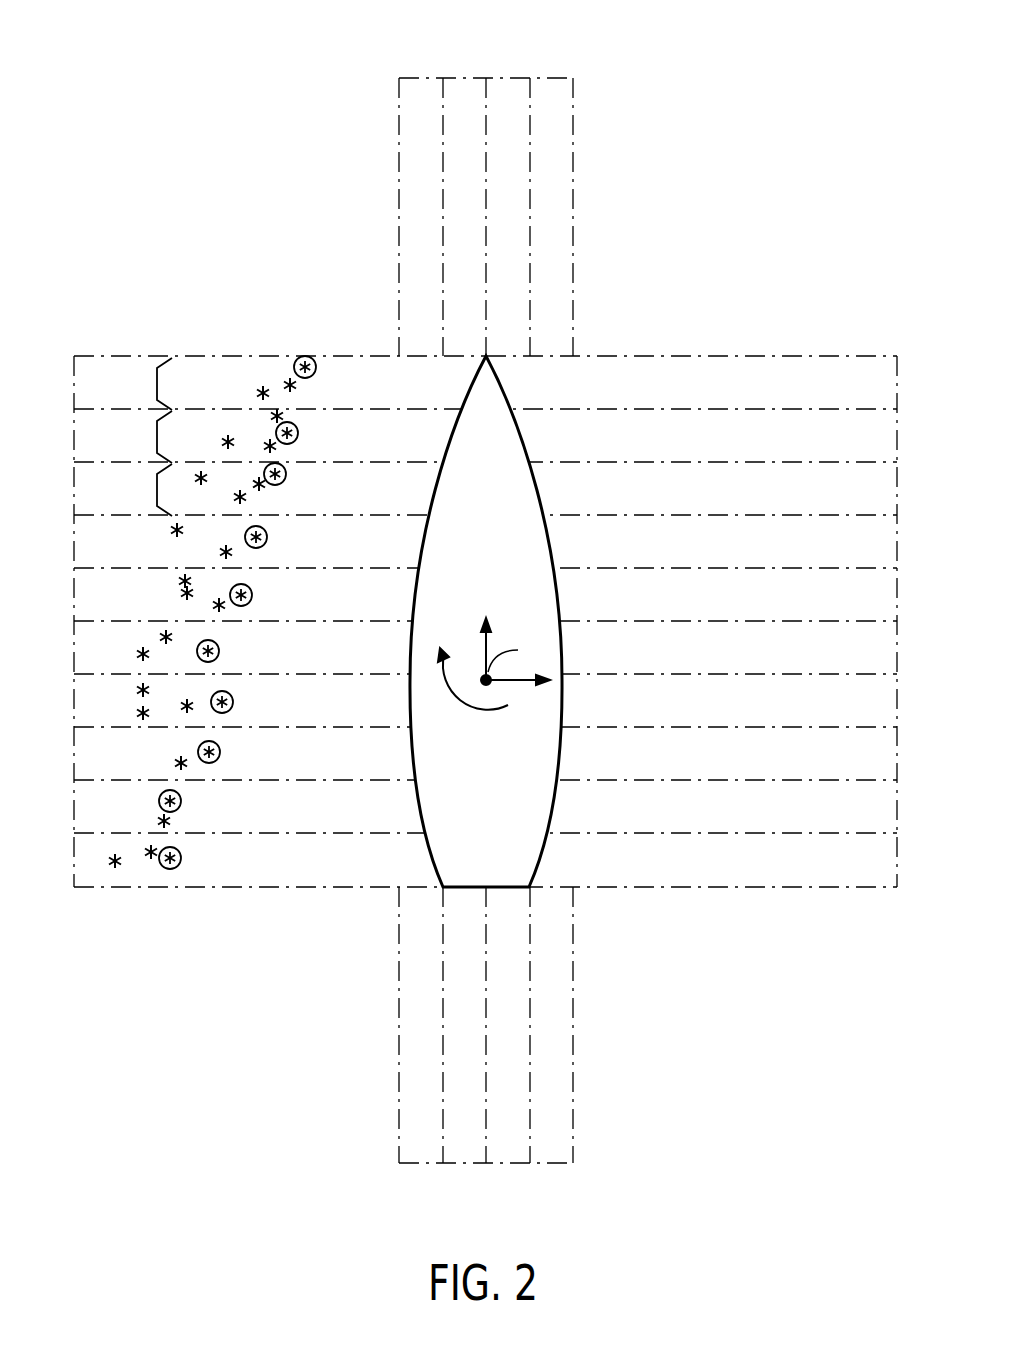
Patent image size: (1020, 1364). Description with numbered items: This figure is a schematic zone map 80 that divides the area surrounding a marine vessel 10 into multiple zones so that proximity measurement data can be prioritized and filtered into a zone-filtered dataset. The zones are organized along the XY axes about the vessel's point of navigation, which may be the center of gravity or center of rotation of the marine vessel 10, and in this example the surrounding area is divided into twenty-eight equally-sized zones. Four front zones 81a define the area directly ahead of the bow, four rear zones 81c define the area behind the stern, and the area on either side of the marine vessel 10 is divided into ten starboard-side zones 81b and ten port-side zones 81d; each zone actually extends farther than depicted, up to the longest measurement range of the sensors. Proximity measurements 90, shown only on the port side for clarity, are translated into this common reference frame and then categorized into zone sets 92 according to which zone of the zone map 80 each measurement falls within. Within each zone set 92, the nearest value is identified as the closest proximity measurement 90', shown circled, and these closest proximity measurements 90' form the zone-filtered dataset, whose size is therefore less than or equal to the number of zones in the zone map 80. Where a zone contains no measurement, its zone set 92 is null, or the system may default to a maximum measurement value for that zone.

The marine vessel 10 is at (503, 392).
The zone map 80 is at (627, 191).
The front zones 81a is at (553, 88).
The starboard-side zones 81b is at (805, 427).
The rear zones 81c is at (553, 1158).
The port-side zones 81d is at (87, 808).
The proximity measurements 90 is at (202, 618).
The closest proximity measurement 90' is at (273, 612).
The zone sets 92 is at (155, 382).